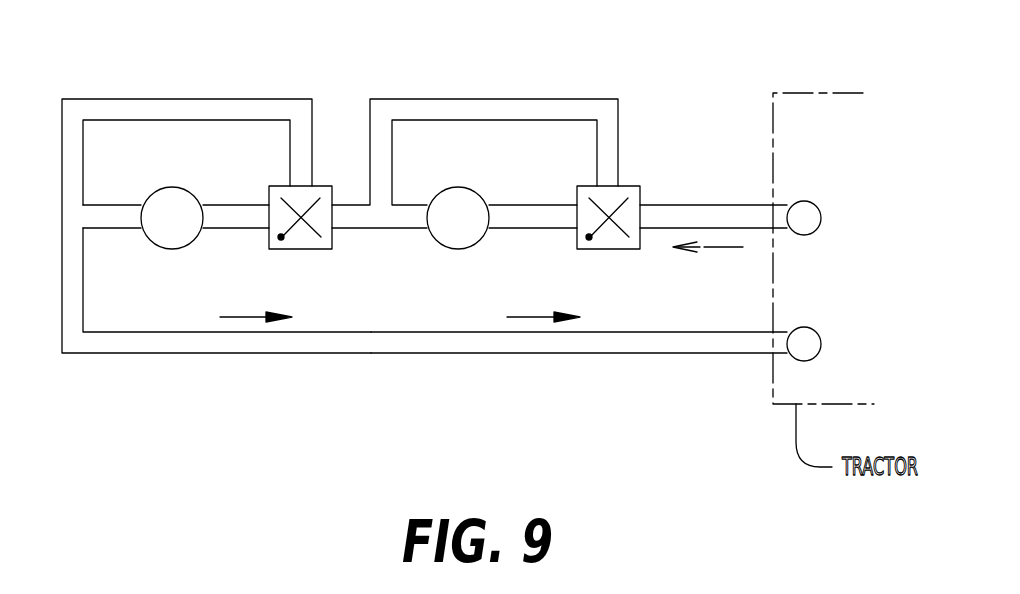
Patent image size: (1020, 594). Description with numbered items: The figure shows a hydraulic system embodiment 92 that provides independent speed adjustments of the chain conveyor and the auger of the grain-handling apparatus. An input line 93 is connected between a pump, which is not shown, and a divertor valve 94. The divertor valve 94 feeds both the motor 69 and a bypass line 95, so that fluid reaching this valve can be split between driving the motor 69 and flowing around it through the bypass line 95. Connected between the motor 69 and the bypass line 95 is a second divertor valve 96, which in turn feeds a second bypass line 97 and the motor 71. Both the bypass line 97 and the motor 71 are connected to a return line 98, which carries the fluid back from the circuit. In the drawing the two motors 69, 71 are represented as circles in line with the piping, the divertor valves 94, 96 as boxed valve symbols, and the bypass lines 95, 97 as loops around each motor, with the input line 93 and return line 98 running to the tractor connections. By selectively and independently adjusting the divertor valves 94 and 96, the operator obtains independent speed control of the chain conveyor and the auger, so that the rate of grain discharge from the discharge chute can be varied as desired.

The hydraulic system embodiment 92 is at (692, 84).
The input line 93 is at (675, 205).
The divertor valve 94 is at (608, 249).
The bypass line 95 is at (523, 99).
The motor 69 is at (458, 187).
The motor 71 is at (171, 187).
The second divertor valve 96 is at (299, 249).
The bypass line 97 is at (187, 99).
The return line 98 is at (371, 353).